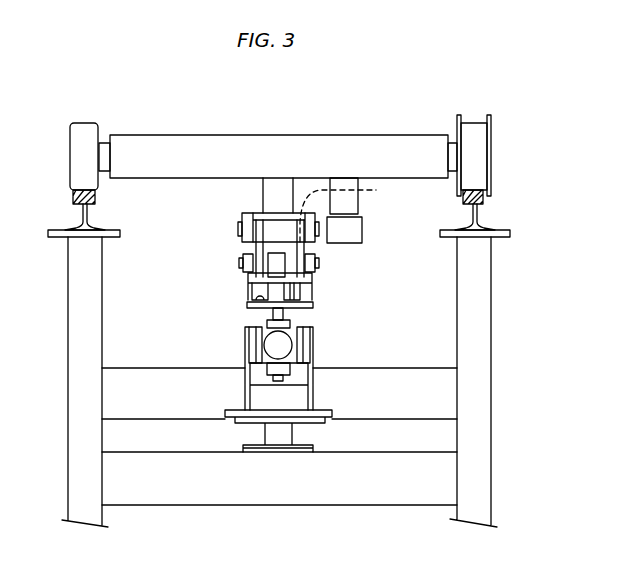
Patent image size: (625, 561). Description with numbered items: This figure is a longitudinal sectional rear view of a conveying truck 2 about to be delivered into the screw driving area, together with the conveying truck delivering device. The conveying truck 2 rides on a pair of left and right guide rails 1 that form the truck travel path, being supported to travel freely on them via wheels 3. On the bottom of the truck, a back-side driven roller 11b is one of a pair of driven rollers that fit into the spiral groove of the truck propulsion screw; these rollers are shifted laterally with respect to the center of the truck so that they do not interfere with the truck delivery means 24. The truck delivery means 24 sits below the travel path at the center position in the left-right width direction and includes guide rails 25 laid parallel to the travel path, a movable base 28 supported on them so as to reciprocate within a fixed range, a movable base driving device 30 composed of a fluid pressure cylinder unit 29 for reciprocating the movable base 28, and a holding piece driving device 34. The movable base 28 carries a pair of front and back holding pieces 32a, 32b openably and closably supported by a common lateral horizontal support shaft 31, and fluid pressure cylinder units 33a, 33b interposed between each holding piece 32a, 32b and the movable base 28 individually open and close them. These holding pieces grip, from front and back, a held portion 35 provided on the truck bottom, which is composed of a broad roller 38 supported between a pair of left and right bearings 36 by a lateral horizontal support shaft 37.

The guide rails 1 is at (78, 195).
The conveying truck 2 is at (390, 132).
The wheels 3 is at (79, 150).
The back-side driven roller 11b is at (355, 229).
The truck delivery means 24 is at (230, 280).
The guide rails 25 is at (255, 348).
The movable base 28 is at (318, 306).
The fluid pressure cylinder unit 29 is at (313, 350).
The movable base driving device 30 is at (262, 346).
The lateral horizontal support shaft 31 is at (240, 262).
The front holding piece 32a is at (250, 216).
The back holding piece 32b is at (358, 213).
The fluid pressure cylinder unit 33a is at (248, 294).
The fluid pressure cylinder unit 33b is at (318, 292).
The holding piece driving device 34 is at (323, 278).
The held portion 35 is at (282, 210).
The bearings 36 is at (299, 212).
The lateral horizontal support shaft 37 is at (239, 230).
The broad roller 38 is at (258, 212).